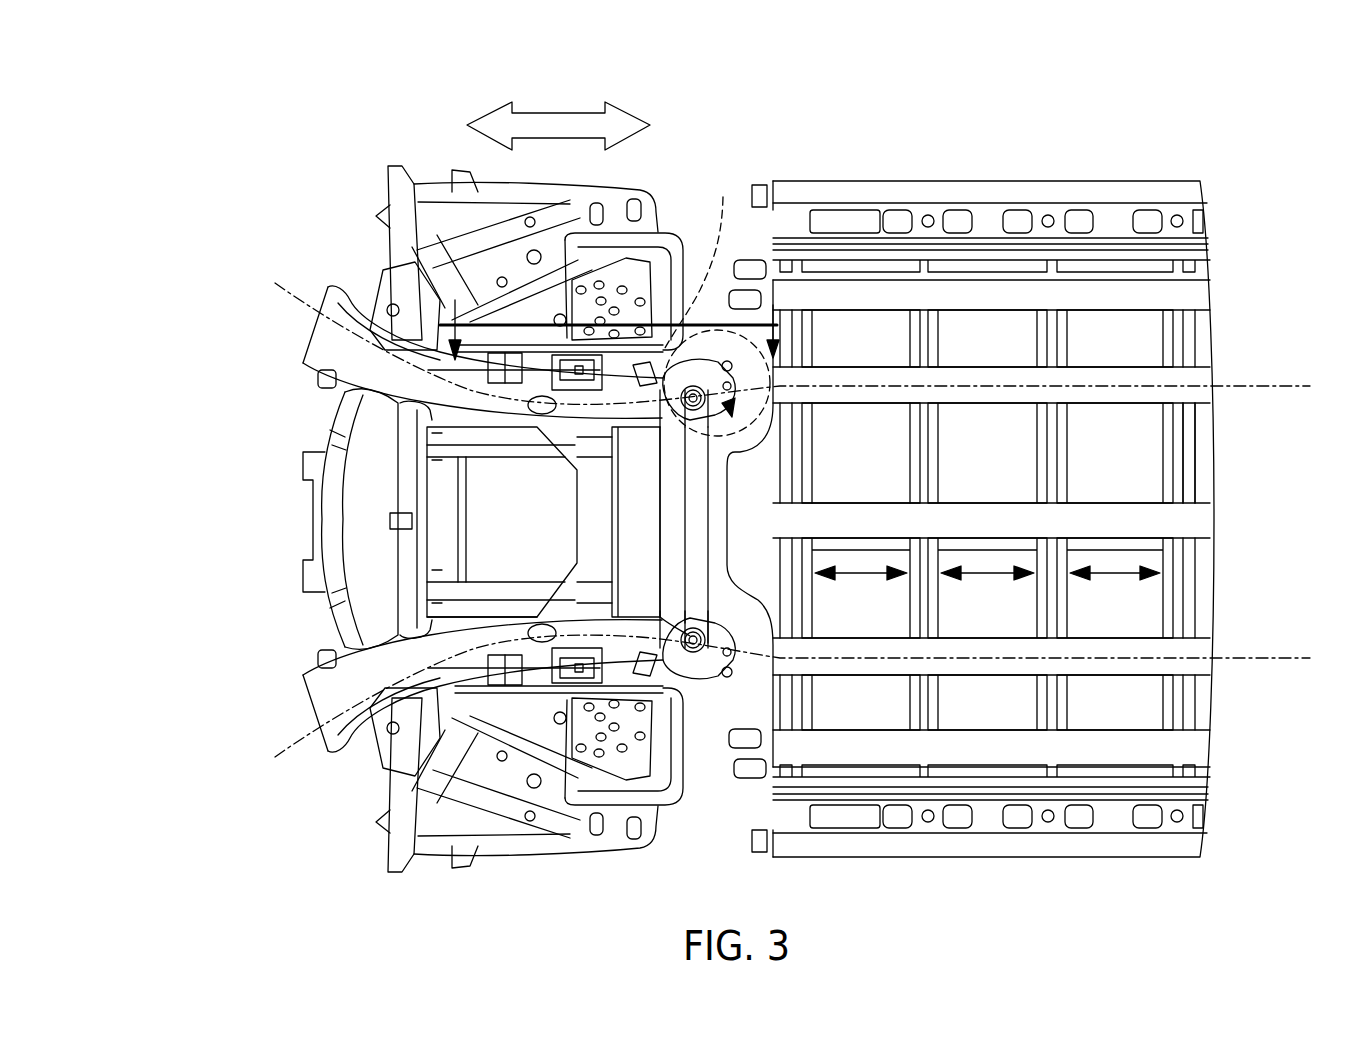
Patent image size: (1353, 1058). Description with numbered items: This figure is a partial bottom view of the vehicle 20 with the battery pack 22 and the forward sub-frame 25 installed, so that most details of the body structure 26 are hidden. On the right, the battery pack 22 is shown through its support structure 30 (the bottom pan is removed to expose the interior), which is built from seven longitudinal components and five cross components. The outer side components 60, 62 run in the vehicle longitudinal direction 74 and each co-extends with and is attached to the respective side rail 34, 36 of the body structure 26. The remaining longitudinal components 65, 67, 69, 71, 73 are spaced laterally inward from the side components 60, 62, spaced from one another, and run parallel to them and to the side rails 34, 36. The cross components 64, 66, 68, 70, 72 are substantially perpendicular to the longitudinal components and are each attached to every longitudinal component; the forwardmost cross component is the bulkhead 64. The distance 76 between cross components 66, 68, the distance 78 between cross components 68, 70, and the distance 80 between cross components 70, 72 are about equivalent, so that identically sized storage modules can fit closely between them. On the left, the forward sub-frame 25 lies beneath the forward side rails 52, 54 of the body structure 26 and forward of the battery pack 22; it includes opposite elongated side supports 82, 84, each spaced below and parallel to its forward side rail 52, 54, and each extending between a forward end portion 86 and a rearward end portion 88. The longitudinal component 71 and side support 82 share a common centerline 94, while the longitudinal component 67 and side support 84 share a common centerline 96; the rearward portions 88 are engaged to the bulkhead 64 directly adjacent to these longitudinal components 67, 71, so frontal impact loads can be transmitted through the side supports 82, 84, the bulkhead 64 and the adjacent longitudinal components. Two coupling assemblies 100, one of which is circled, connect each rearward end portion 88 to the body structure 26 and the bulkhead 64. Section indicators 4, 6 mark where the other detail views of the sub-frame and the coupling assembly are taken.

The section line 4- 4 is at (609, 319).
The section line 6- 6 is at (696, 255).
The vehicle 20 is at (158, 233).
The battery pack 22 is at (1214, 329).
The forward sub-frame 25 is at (496, 436).
The body structure 26 is at (304, 496).
The support structure 30 is at (1185, 750).
The side rail 34 is at (880, 190).
The side rail 36 is at (930, 848).
The forward side rail 52 is at (325, 345).
The forward side rail 54 is at (303, 707).
The side component 60 is at (955, 245).
The side component 62 is at (1100, 795).
The bulkhead 64 is at (712, 567).
The longitudinal component 65 is at (840, 730).
The cross component 66 is at (815, 463).
The longitudinal component 67 is at (855, 638).
The cross component 68 is at (940, 443).
The longitudinal component 69 is at (853, 500).
The cross component 70 is at (1065, 445).
The longitudinal component 71 is at (823, 363).
The cross component 72 is at (1195, 445).
The longitudinal component 73 is at (953, 313).
The vehicle longitudinal direction 74 is at (560, 112).
The distance 76 is at (860, 578).
The distance 78 is at (992, 578).
The distance 80 is at (1122, 578).
The side support 82 is at (518, 423).
The side support 84 is at (495, 620).
The forward end portion 86 is at (383, 405).
The rearward end portion 88 is at (637, 430).
The common centerline 94 is at (1288, 380).
The common centerline 96 is at (1288, 655).
The coupling assembly 100 is at (745, 418).